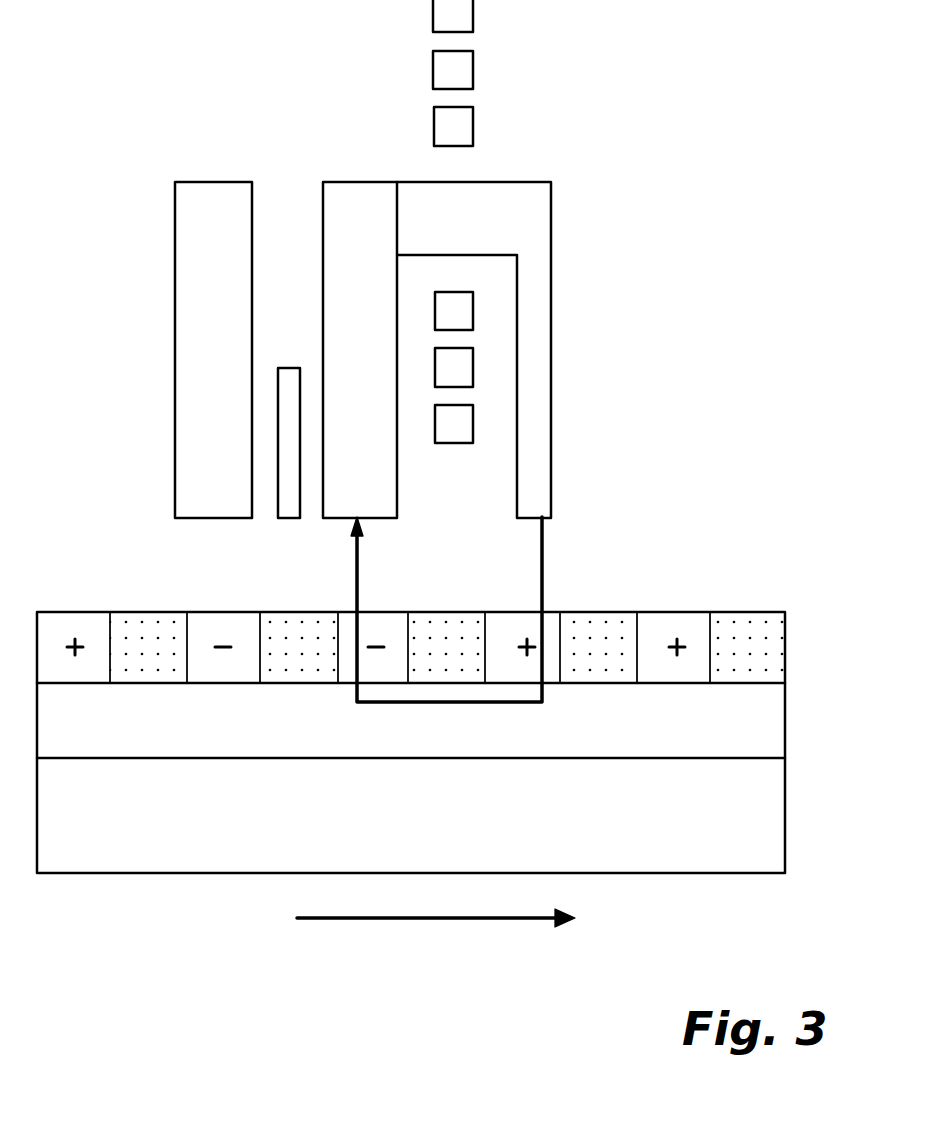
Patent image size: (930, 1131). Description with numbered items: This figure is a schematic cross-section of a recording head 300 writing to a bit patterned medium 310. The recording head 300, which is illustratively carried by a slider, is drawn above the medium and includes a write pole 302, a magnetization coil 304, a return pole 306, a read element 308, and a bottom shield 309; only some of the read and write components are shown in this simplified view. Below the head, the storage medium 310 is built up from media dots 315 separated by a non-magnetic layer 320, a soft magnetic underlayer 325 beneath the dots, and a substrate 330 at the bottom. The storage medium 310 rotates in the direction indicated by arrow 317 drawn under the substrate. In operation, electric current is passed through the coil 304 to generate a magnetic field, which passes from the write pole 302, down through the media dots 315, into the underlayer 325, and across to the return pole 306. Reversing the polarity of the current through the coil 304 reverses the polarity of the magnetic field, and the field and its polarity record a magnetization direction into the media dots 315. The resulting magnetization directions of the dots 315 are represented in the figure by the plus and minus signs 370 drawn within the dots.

The recording head 300 is at (577, 166).
The write pole 302 is at (547, 288).
The magnetization coil 304 is at (447, 367).
The return pole 306 is at (337, 242).
The read element 308 is at (288, 440).
The bottom shield 309 is at (190, 268).
The bit patterned medium 310 is at (788, 786).
The media dots 315 is at (87, 620).
The arrow 317 is at (405, 920).
The non-magnetic layer 320 is at (145, 612).
The soft magnetic underlayer 325 is at (773, 715).
The substrate 330 is at (740, 823).
The "+" and "−" signs 370 is at (75, 655).